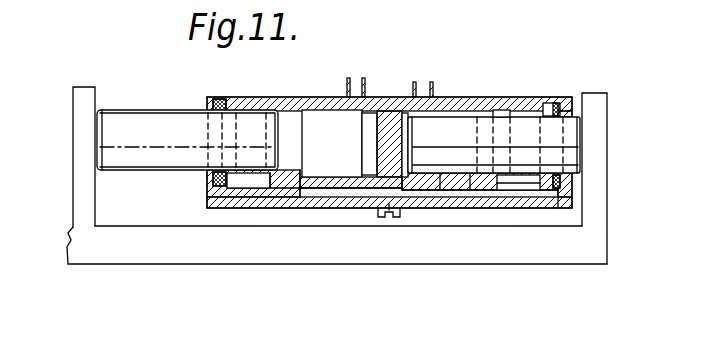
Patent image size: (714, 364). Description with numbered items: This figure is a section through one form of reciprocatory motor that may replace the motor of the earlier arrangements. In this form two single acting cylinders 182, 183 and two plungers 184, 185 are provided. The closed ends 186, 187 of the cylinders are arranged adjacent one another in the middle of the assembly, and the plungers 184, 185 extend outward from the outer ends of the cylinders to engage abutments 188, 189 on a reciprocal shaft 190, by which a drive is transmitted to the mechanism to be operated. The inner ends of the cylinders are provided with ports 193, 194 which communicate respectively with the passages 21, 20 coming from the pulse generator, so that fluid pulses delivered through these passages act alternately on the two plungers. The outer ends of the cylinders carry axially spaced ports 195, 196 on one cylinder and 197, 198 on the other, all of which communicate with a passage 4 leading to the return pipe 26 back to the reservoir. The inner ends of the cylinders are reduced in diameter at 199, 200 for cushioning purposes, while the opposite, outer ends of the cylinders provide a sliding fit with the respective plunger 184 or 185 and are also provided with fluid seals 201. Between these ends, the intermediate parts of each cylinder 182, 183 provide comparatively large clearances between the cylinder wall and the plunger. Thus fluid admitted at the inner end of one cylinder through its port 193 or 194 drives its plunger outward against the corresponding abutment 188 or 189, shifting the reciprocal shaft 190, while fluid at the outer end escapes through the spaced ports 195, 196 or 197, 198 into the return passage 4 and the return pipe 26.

The passage 4 is at (348, 190).
The passage 20 is at (418, 85).
The passage 21 is at (350, 84).
The return pipe 26 is at (390, 215).
The single acting cylinder 182 is at (318, 182).
The single acting cylinder 183 is at (460, 185).
The plunger 184 is at (148, 152).
The plunger 185 is at (523, 183).
The closed end 186 is at (410, 100).
The closed end 187 is at (392, 152).
The abutment 188 is at (87, 105).
The abutment 189 is at (593, 100).
The reciprocal shaft 190 is at (81, 250).
The port 193 is at (378, 124).
The port 194 is at (437, 110).
The port 195 is at (268, 188).
The port 196 is at (226, 172).
The port 197 is at (503, 183).
The port 198 is at (548, 190).
The reduced diameter portion 199 is at (368, 157).
The reduced diameter portion 200 is at (408, 185).
The fluid seal 201 is at (220, 106).